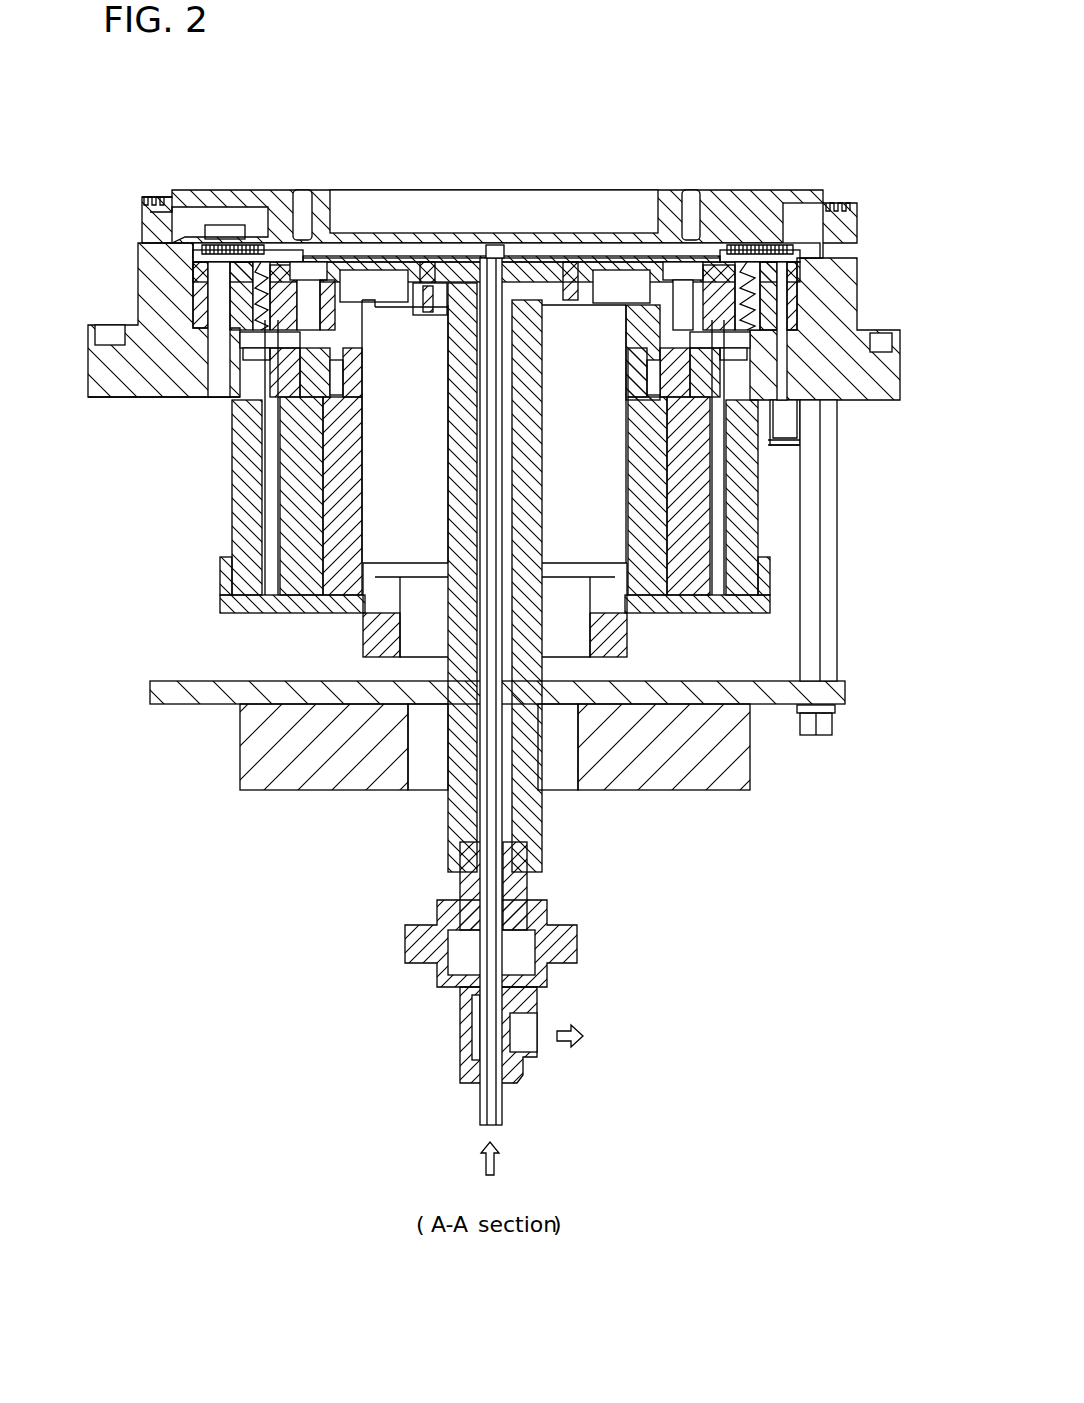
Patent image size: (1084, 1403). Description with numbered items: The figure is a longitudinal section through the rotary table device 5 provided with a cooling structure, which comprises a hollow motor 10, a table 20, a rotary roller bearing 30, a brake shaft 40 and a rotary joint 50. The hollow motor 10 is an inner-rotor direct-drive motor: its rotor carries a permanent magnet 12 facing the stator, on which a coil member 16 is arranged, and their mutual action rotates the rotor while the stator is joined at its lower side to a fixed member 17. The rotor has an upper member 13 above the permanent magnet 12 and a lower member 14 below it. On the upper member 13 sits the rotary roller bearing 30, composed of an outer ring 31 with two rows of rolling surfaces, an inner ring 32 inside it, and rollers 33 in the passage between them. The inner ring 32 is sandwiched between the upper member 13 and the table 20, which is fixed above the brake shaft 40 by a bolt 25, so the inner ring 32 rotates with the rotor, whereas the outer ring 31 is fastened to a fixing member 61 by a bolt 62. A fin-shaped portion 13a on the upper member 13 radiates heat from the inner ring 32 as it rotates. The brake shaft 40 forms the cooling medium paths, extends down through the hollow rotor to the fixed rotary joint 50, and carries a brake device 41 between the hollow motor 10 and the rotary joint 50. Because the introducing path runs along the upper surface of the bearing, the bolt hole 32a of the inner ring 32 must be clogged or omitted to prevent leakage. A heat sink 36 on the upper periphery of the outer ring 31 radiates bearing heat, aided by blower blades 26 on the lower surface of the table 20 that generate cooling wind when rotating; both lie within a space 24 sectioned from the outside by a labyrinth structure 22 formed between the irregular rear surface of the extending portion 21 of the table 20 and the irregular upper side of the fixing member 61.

The rotary table device 5 is at (649, 105).
The hollow motor 10 is at (734, 536).
The permanent magnet 12 is at (650, 494).
The upper member 13 is at (238, 345).
The fin-shaped portion 13a is at (272, 337).
The lower member 14 is at (292, 610).
The coil member 16 is at (300, 525).
The fixed member 17 is at (755, 623).
The table 20 is at (780, 188).
The extending portion 21 is at (188, 216).
The labyrinth structure 22 is at (142, 196).
The space 24 is at (227, 232).
The bolt 25 is at (422, 305).
The blower blades 26 is at (250, 262).
The rotary roller bearing 30 is at (812, 324).
The outer ring 31 is at (196, 285).
The inner ring 32 is at (797, 305).
The bolt hole 32a is at (797, 288).
The rollers 33 is at (250, 310).
The heat sink 36 is at (205, 250).
The brake shaft 40 is at (552, 827).
The brake device 41 is at (740, 781).
The rotary joint 50 is at (559, 975).
The fixing member 61 is at (132, 398).
The bolt 62 is at (185, 397).